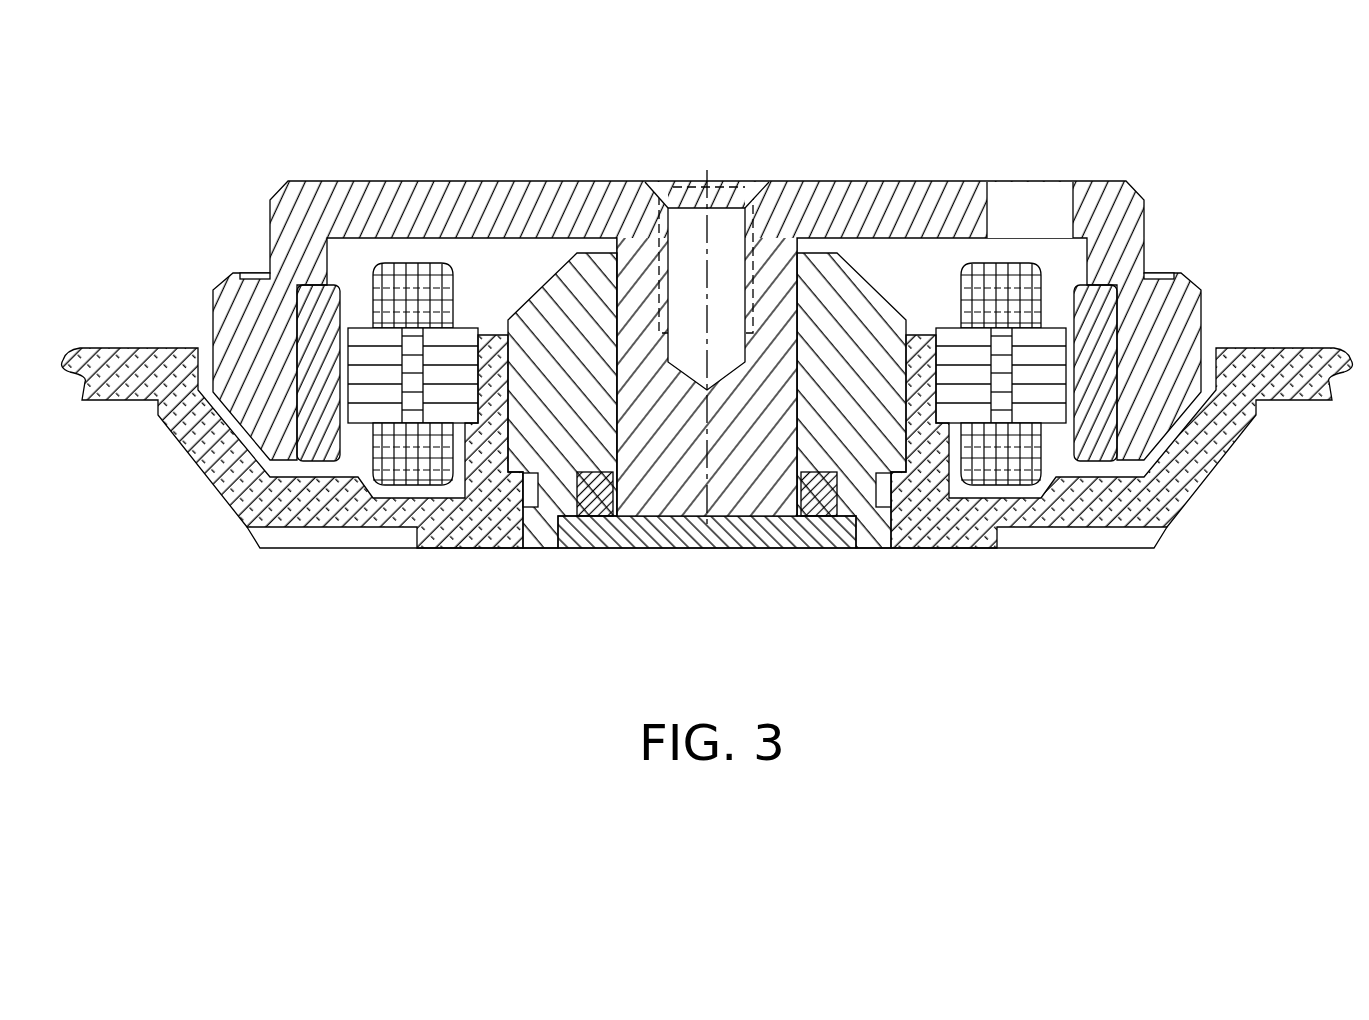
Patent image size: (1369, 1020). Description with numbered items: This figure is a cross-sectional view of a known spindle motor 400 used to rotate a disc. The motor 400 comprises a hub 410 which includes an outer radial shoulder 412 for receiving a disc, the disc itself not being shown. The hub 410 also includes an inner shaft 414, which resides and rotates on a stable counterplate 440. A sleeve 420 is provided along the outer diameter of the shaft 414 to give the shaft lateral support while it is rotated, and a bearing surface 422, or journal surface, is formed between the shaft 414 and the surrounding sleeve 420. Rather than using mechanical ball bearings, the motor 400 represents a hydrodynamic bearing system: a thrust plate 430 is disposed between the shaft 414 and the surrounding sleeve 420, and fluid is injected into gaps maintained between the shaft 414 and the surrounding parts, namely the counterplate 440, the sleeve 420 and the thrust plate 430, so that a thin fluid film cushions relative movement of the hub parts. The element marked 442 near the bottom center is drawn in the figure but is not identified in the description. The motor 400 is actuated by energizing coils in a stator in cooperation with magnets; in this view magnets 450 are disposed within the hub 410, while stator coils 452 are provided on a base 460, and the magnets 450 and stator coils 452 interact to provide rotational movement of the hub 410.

The motor 400 is at (707, 328).
The hub 410 is at (670, 310).
The outer radial shoulder 412 is at (253, 273).
The inner shaft 414 is at (775, 248).
The sleeve 420 is at (857, 307).
The bearing surface 422 is at (607, 303).
The thrust plate 430 is at (593, 500).
The counterplate 440 is at (800, 533).
The center axis 442 is at (707, 530).
The magnets 450 is at (315, 435).
The stator coils 452 is at (1040, 340).
The base 460 is at (420, 510).